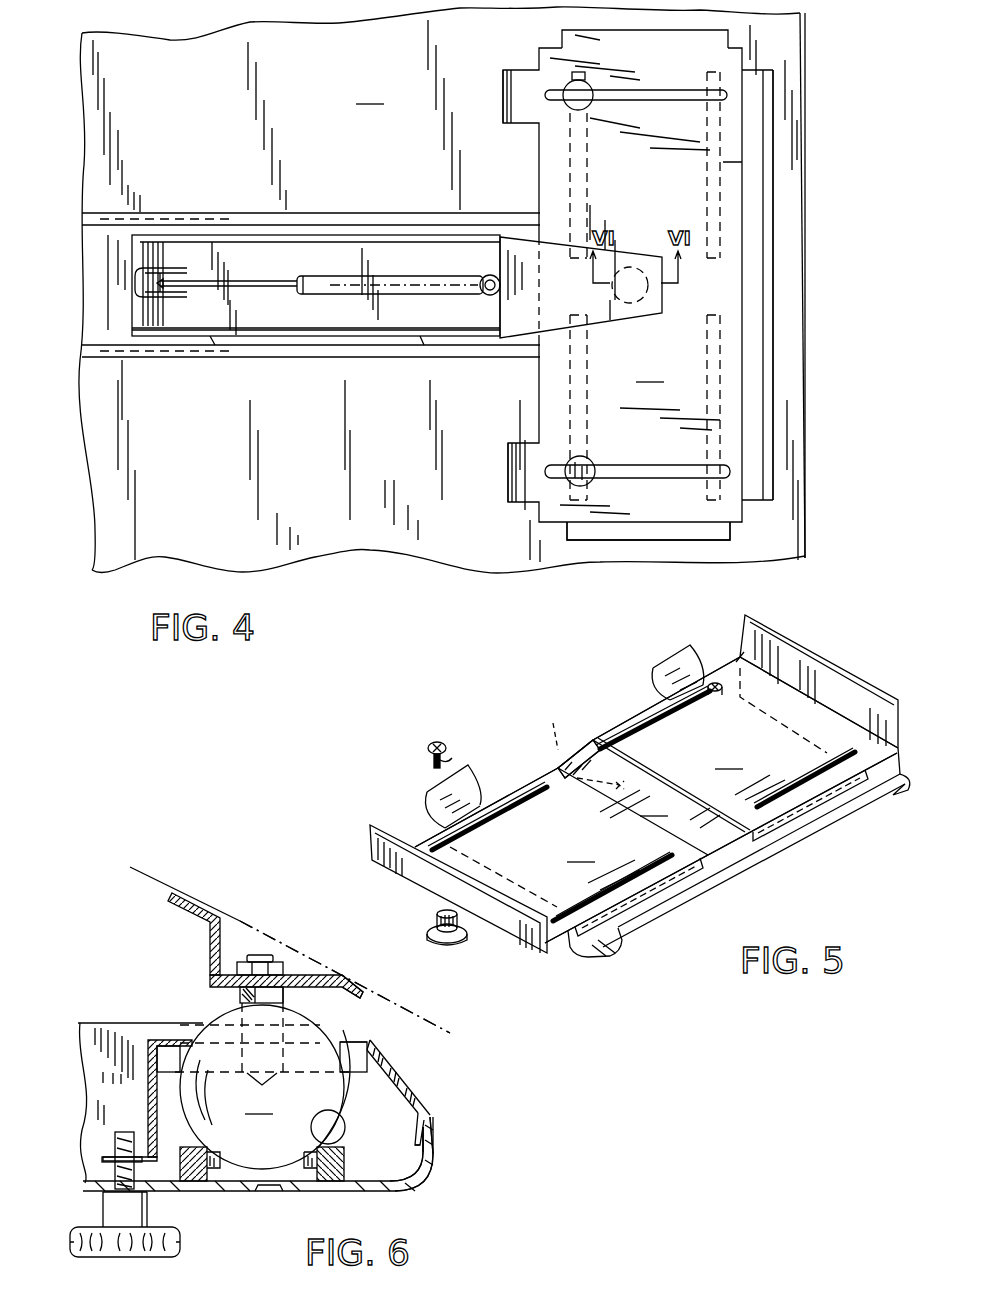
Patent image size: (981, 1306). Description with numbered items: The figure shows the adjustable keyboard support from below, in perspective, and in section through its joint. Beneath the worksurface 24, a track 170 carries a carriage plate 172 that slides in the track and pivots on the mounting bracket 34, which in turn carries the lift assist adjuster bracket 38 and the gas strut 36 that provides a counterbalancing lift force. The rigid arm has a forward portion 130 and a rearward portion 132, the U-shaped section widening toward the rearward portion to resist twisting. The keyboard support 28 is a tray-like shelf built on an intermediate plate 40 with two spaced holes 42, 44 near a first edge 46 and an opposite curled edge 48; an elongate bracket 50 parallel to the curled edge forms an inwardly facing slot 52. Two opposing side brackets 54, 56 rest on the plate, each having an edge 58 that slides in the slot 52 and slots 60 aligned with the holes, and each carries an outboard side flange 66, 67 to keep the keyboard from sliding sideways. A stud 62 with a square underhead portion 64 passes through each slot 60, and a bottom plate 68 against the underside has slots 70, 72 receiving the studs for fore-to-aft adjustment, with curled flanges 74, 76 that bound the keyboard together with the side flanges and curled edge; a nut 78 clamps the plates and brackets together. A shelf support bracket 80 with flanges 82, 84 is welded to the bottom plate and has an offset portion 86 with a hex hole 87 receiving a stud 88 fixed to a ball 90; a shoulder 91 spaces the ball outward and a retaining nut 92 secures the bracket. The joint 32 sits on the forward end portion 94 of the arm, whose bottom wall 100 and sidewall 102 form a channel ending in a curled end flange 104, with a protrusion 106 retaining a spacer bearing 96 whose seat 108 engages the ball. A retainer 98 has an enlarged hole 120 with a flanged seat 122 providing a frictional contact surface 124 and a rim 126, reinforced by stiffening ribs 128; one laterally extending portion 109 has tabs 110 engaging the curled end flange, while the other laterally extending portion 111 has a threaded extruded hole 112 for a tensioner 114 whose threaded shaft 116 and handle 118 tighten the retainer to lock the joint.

In FIG. 4, the worksurface 24 is at (787, 300).
In FIG. 4, the keyboard support 28 is at (785, 270).
In FIG. 5, the keyboard support 28 is at (818, 640).
In FIG. 6, the joint 32 is at (128, 965).
In FIG. 4, the mounting bracket 34 is at (160, 338).
In FIG. 4, the gas strut 36 is at (432, 292).
In FIG. 4, the lift assist adjuster bracket 38 is at (165, 296).
In FIG. 4, the intermediate plate 40 is at (765, 357).
In FIG. 5, the intermediate plate 40 is at (651, 797).
In FIG. 5, the hole 42 is at (462, 842).
In FIG. 5, the hole 44 is at (718, 692).
In FIG. 5, the first edge 46 is at (582, 748).
In FIG. 5, the curled edge 48 is at (803, 838).
In FIG. 5, the elongate bracket 50 is at (610, 950).
In FIG. 5, the slot 52 is at (592, 958).
In FIG. 4, the side bracket 54 is at (708, 540).
In FIG. 5, the side bracket 54 is at (561, 855).
In FIG. 5, the side bracket 56 is at (745, 746).
In FIG. 5, the edge 58 is at (905, 745).
In FIG. 5, the slot 60 is at (527, 793).
In FIG. 5, the stud 62 is at (426, 748).
In FIG. 5, the square underhead portion 64 is at (447, 761).
In FIG. 5, the outboard side flange 66 is at (528, 951).
In FIG. 5, the outboard side flange 67 is at (830, 662).
In FIG. 4, the bottom plate 68 is at (622, 285).
In FIG. 5, the bottom plate 68 is at (554, 722).
In FIG. 6, the bottom plate 68 is at (168, 884).
In FIG. 4, the slot 70 is at (668, 466).
In FIG. 5, the slot 70 is at (505, 875).
In FIG. 5, the slot 72 is at (726, 647).
In FIG. 4, the curled flange 74 is at (510, 470).
In FIG. 5, the curled flange 74 is at (462, 770).
In FIG. 5, the curled flange 76 is at (658, 672).
In FIG. 4, the nut 78 is at (592, 461).
In FIG. 5, the nut 78 is at (458, 940).
In FIG. 6, the shelf support bracket 80 is at (250, 908).
In FIG. 6, the flange 82 is at (185, 906).
In FIG. 6, the flange 84 is at (360, 997).
In FIG. 6, the offset portion 86 is at (212, 975).
In FIG. 6, the hex hole 87 is at (240, 995).
In FIG. 6, the stud 88 is at (262, 958).
In FIG. 4, the ball 90 is at (648, 297).
In FIG. 6, the ball 90 is at (262, 1086).
In FIG. 6, the shoulder 91 is at (285, 1000).
In FIG. 6, the retaining nut 92 is at (285, 968).
In FIG. 6, the forward end portion 94 is at (375, 1196).
In FIG. 6, the spacer bearing 96 is at (345, 1178).
In FIG. 6, the retainer 98 is at (400, 1069).
In FIG. 6, the bottom wall 100 is at (345, 1193).
In FIG. 6, the sidewall 102 is at (433, 1160).
In FIG. 6, the curled end flange 104 is at (428, 1143).
In FIG. 6, the protrusion 106 is at (265, 1193).
In FIG. 6, the seat 108 is at (349, 1124).
In FIG. 6, the laterally extending portion 109 is at (415, 1094).
In FIG. 6, the tab 110 is at (424, 1130).
In FIG. 6, the laterally extending portion 111 is at (106, 1103).
In FIG. 6, the threaded extruded hole 112 is at (114, 1140).
In FIG. 6, the tensioner 114 is at (168, 1230).
In FIG. 6, the threaded shaft 116 is at (105, 1156).
In FIG. 6, the handle 118 is at (168, 1250).
In FIG. 6, the enlarged hole 120 is at (312, 1040).
In FIG. 6, the flanged seat 122 is at (365, 1040).
In FIG. 6, the frictional contact surface 124 is at (318, 1125).
In FIG. 6, the rim 126 is at (183, 1040).
In FIG. 6, the stiffening rib 128 is at (170, 1043).
In FIG. 4, the forward portion 130 is at (574, 299).
In FIG. 4, the rearward portion 132 is at (360, 323).
In FIG. 4, the track 170 is at (380, 226).
In FIG. 4, the carriage plate 172 is at (118, 340).